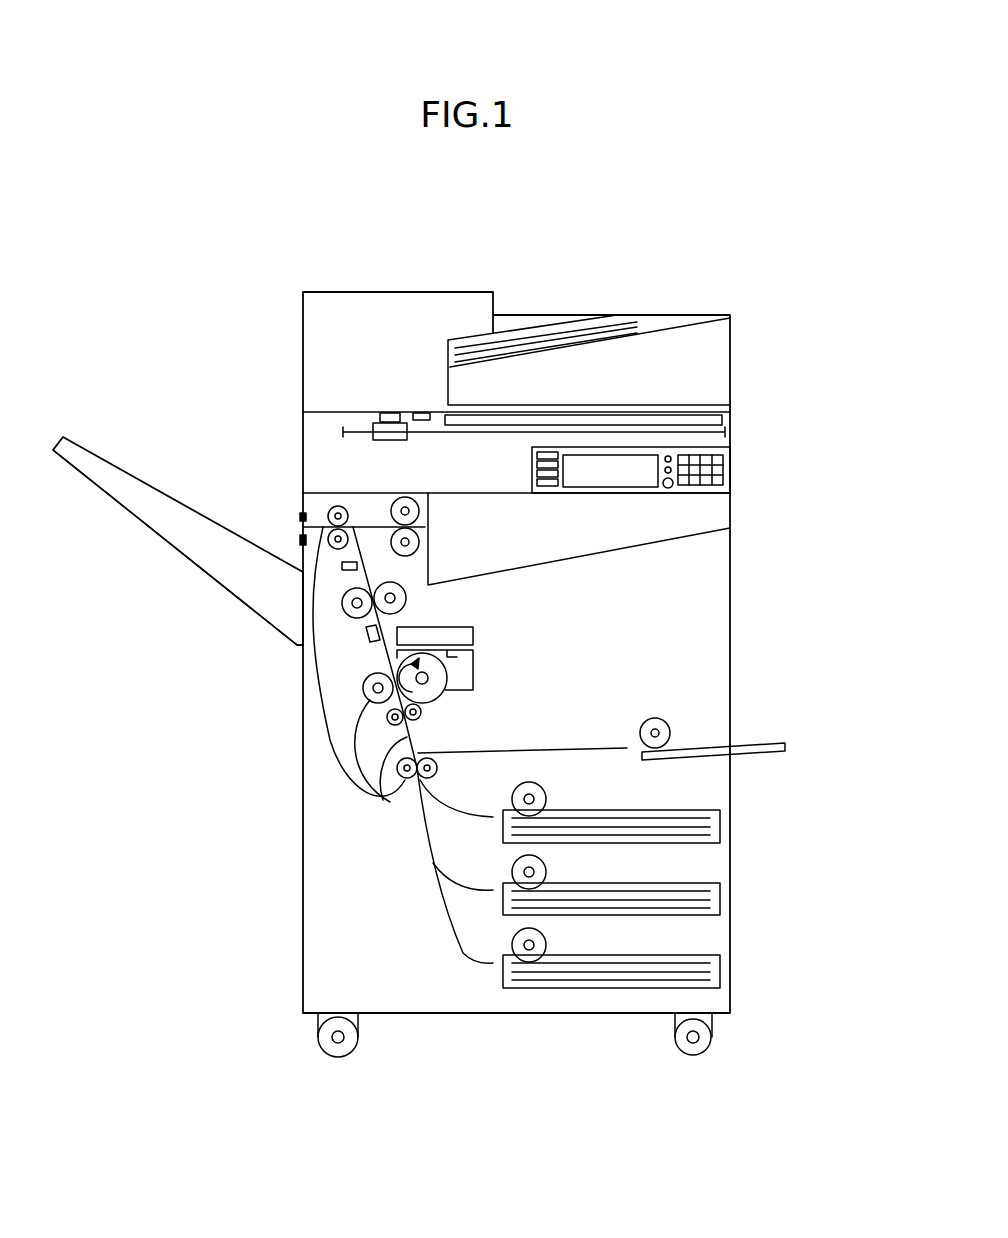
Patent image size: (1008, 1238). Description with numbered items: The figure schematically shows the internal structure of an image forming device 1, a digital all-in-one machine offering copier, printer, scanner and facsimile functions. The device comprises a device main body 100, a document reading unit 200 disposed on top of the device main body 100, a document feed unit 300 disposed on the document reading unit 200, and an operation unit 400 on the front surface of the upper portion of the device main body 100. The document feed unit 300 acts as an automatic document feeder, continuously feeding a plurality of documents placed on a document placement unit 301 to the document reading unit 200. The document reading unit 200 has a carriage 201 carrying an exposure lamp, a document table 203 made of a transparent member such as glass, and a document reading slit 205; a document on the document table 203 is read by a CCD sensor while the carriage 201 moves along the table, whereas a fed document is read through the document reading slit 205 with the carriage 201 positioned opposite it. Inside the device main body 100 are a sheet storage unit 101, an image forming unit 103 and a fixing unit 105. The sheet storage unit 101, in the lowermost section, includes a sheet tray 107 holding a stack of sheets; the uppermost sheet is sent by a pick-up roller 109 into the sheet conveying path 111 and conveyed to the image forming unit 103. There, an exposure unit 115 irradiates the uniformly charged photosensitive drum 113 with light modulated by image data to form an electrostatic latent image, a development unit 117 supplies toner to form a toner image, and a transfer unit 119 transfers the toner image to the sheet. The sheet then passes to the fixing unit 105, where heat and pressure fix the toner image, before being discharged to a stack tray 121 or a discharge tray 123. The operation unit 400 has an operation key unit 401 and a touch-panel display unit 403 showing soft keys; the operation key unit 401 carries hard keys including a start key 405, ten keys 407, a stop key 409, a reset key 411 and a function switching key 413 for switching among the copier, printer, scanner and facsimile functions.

The image forming device 1 is at (114, 290).
The device main body 100 is at (712, 668).
The sheet storage unit 101 is at (679, 883).
The image forming unit 103 is at (350, 678).
The fixing unit 105 is at (357, 615).
The sheet tray 107 is at (717, 838).
The pick-up roller 109 is at (548, 800).
The sheet conveying path 111 is at (383, 800).
The photosensitive drum 113 is at (428, 700).
The exposure unit 115 is at (475, 636).
The development unit 117 is at (473, 672).
The transfer unit 119 is at (373, 697).
The stack tray 121 is at (222, 585).
The discharge tray 123 is at (576, 558).
The document reading unit 200 is at (496, 433).
The carriage 201 is at (392, 441).
The document table 203 is at (718, 418).
The document reading slit 205 is at (385, 412).
The document feed unit 300 is at (589, 313).
The document placement unit 301 is at (652, 322).
The operation unit 400 is at (655, 456).
The operation key unit 401 is at (735, 493).
The display unit 403 is at (585, 468).
The start key 405 is at (666, 486).
The ten keys 407 is at (710, 488).
The stop key 409 is at (668, 462).
The reset key 411 is at (705, 448).
The function switching key 413 is at (535, 481).